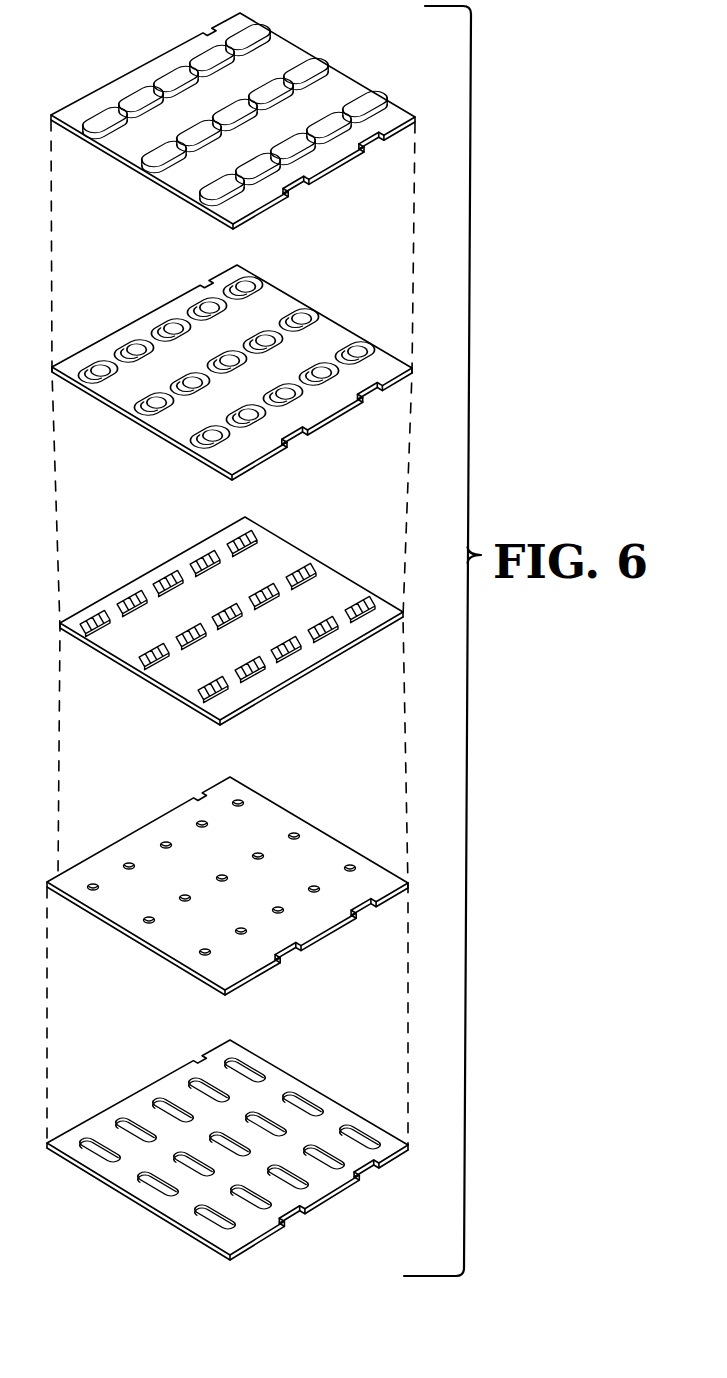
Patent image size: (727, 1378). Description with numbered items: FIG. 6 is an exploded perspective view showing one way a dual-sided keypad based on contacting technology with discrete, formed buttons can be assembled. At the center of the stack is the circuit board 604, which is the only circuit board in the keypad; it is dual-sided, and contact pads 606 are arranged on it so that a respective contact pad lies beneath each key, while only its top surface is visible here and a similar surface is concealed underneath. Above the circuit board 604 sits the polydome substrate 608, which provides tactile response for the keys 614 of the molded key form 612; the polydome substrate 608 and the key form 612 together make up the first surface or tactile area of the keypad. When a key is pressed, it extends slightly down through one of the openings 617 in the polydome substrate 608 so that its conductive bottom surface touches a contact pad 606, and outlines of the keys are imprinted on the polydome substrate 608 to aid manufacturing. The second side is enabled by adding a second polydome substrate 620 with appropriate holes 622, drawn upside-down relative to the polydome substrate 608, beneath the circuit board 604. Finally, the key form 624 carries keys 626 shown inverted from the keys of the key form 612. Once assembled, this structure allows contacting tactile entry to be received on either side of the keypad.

The molded key form 612 is at (340, 82).
The keys 614 is at (172, 70).
The polydome substrate 608 is at (338, 332).
The openings 617 is at (205, 305).
The circuit board 604 is at (330, 580).
The contact pads 606 is at (200, 558).
The second polydome substrate 620 is at (323, 845).
The holes 622 is at (200, 821).
The key form 624 is at (280, 1082).
The keys 626 is at (215, 1063).